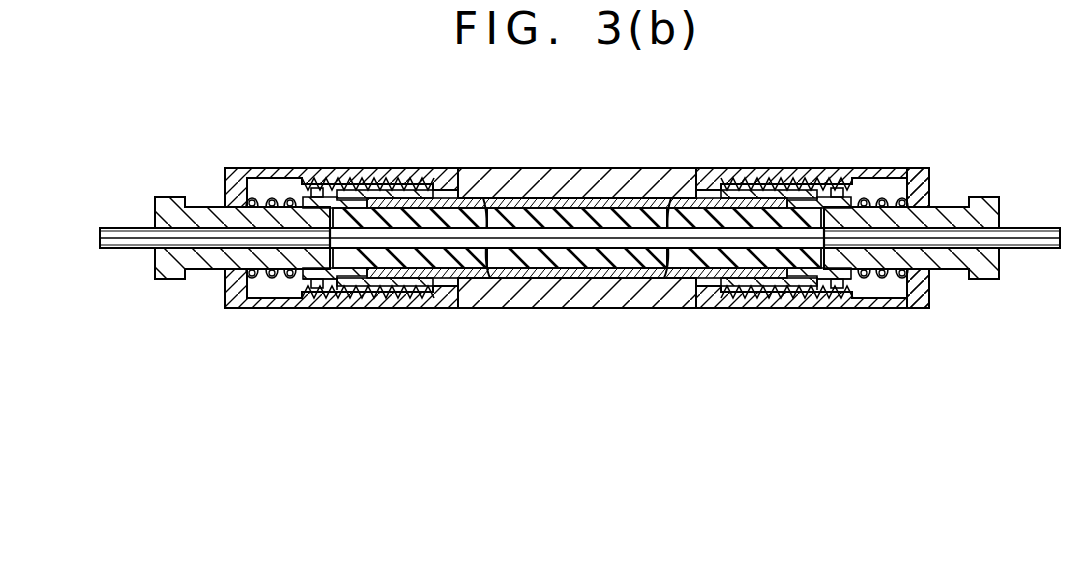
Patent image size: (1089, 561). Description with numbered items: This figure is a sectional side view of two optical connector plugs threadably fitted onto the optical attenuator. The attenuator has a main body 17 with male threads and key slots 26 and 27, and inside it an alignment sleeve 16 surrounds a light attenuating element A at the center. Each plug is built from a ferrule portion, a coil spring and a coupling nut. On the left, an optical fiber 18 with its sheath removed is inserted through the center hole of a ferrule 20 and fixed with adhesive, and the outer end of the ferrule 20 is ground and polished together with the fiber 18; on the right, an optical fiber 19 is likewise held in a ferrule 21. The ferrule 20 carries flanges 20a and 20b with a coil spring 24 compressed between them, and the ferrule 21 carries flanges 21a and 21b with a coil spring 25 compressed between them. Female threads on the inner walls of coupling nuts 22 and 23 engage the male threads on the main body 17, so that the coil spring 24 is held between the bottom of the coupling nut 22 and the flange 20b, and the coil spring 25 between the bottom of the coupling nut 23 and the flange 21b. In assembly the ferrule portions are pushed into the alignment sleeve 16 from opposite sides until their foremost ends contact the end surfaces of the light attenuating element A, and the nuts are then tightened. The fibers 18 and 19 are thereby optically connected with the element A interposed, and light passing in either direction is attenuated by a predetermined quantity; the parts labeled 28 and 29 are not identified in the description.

The alignment sleeve 16 is at (688, 203).
The main body 17 is at (516, 168).
The optical fiber 18 is at (412, 224).
The optical fiber 19 is at (750, 240).
The ferrule 20 is at (203, 207).
The flange 20a is at (168, 280).
The flange 20b is at (325, 291).
The ferrule 21 is at (958, 207).
The flange 21a is at (995, 280).
The flange 21b is at (838, 273).
The coupling nut 22 is at (318, 186).
The coupling nut 23 is at (905, 180).
The coil spring 24 is at (288, 292).
The coil spring 25 is at (893, 277).
The key slot 26 is at (316, 196).
The key slot 27 is at (840, 188).
The nut 28 is at (338, 188).
The ring 29 is at (815, 196).
The light attenuating element A is at (596, 215).